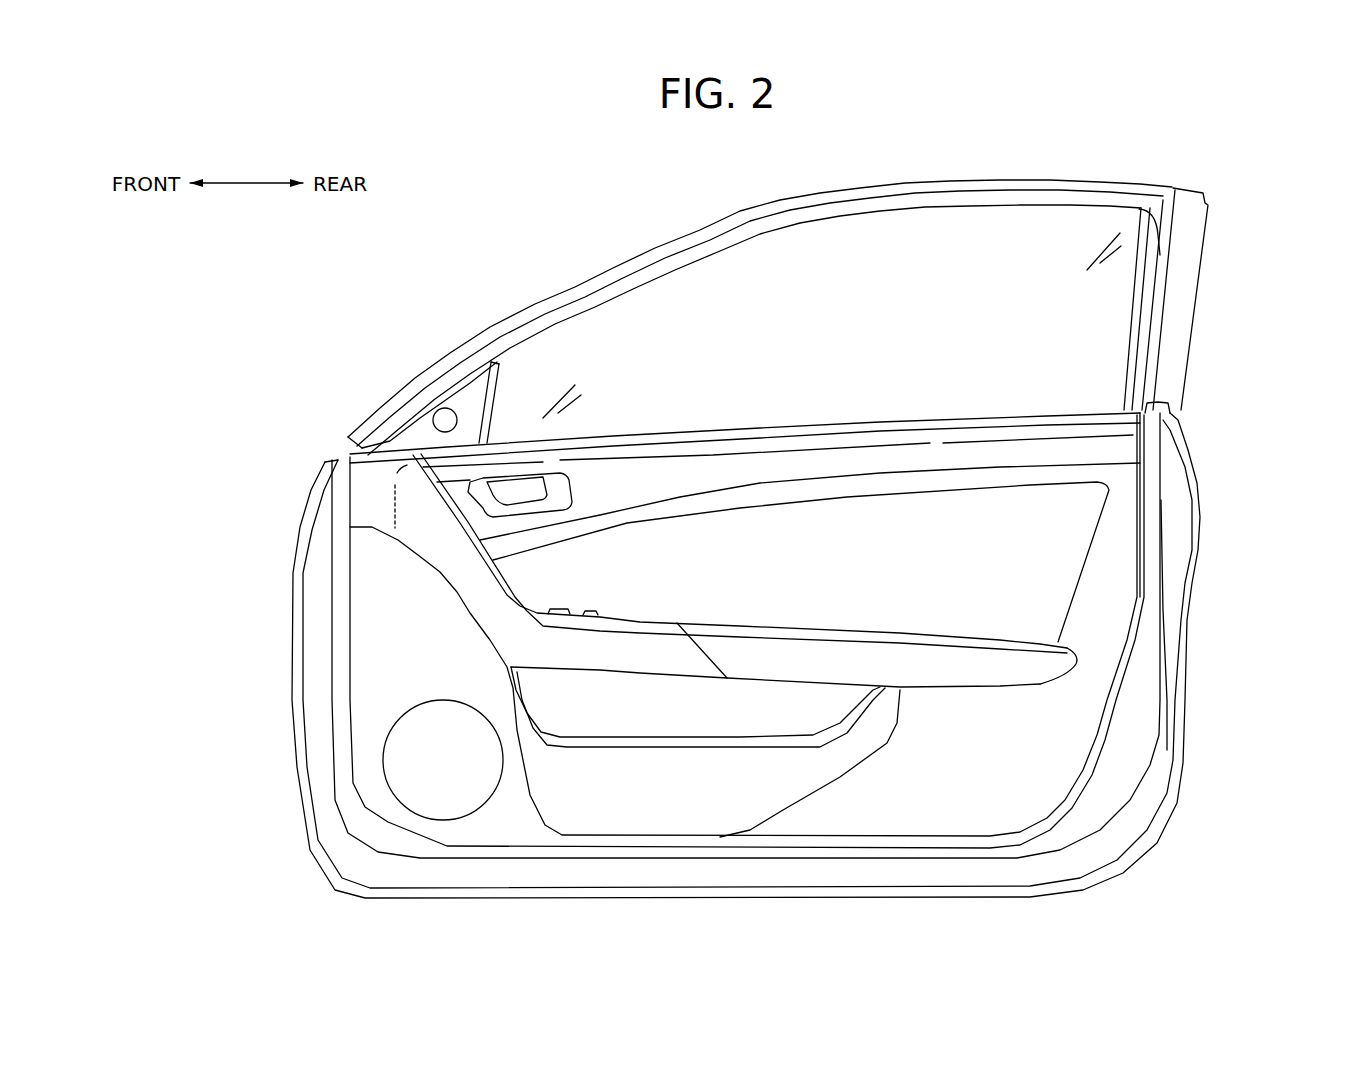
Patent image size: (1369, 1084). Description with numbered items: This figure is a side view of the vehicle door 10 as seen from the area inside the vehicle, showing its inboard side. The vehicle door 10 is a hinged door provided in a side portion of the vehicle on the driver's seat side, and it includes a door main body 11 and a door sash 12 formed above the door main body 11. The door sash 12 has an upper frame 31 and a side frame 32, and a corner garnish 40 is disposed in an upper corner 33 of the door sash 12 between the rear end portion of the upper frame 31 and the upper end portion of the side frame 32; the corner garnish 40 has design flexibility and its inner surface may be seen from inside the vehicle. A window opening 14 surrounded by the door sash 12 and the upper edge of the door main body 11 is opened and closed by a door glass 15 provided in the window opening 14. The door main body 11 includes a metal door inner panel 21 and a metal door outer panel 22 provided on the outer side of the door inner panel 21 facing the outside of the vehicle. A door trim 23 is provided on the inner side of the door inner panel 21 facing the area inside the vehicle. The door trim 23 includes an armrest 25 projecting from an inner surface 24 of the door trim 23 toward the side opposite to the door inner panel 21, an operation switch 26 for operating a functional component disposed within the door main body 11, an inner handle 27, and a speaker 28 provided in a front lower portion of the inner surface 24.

The vehicle door 10 is at (771, 533).
The door main body 11 is at (1298, 558).
The door sash 12 is at (824, 285).
The window opening 14 is at (1133, 345).
The door glass 15 is at (940, 277).
The door inner panel 21 is at (1162, 675).
The door outer panel 22 is at (1198, 572).
The door trim 23 is at (817, 576).
The inner surface 24 is at (809, 801).
The armrest 25 is at (745, 697).
The operation switch 26 is at (745, 421).
The inner handle 27 is at (520, 364).
The speaker 28 is at (473, 815).
The upper frame 31 is at (858, 188).
The side frame 32 is at (1207, 237).
The upper corner 33 is at (1128, 222).
The corner garnish 40 is at (1143, 205).